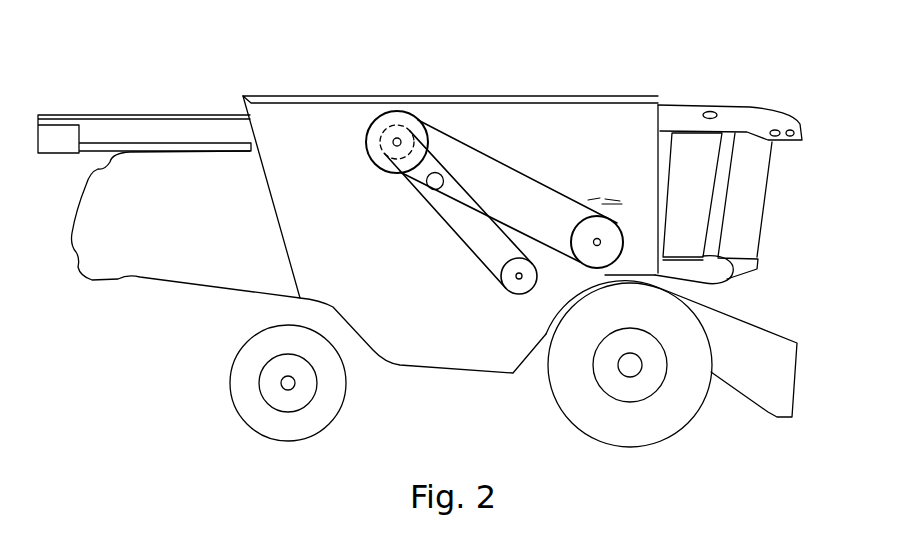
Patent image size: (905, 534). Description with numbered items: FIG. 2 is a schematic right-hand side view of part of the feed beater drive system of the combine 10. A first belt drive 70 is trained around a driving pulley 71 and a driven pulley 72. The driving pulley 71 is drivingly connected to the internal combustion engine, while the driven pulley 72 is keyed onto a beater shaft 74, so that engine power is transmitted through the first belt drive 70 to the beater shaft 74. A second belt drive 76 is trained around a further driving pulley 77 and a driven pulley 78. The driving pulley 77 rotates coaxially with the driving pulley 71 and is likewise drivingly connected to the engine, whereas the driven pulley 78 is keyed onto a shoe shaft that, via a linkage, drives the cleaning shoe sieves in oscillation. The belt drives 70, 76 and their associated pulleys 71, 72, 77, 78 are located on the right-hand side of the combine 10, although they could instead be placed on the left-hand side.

The combine 10 is at (620, 92).
The first belt drive 70 is at (552, 188).
The driving pulley 71 is at (371, 160).
The driven pulley 72 is at (618, 225).
The beater shaft 74 is at (595, 246).
The second belt drive 76 is at (468, 247).
The driving pulley 77 is at (389, 157).
The driven pulley 78 is at (509, 292).